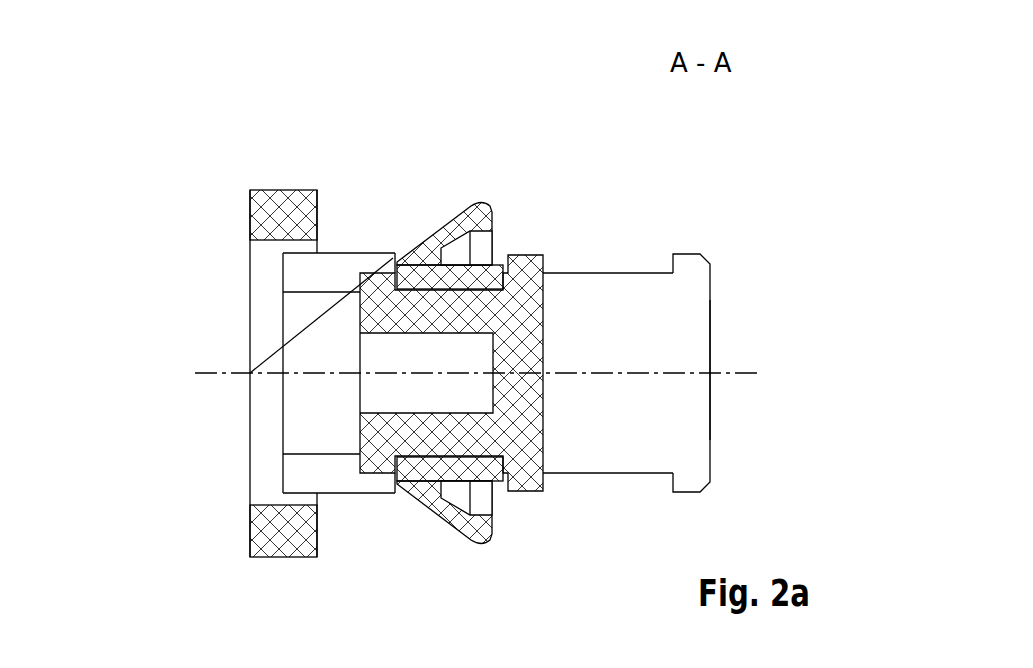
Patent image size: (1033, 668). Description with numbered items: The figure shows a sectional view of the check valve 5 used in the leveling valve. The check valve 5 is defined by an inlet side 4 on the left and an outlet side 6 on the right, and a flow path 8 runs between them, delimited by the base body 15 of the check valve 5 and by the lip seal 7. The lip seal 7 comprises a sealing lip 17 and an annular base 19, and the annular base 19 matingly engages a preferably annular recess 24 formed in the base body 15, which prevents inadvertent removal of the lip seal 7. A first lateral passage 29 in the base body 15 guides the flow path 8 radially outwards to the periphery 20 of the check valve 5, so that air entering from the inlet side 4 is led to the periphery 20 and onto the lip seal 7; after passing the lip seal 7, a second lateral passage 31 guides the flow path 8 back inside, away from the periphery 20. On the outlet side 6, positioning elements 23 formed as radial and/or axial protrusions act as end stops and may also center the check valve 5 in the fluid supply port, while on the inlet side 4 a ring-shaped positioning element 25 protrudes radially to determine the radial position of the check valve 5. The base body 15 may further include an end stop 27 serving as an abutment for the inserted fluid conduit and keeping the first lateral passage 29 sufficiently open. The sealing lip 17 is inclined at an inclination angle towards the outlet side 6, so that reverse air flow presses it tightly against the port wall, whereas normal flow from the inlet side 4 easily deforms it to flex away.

The inlet side 4 is at (152, 292).
The check valve 5 is at (550, 118).
The outlet side 6 is at (745, 303).
The lip seal 7 is at (423, 215).
The flow path 8 is at (398, 216).
The base body 15 is at (527, 274).
The sealing lip 17 is at (457, 226).
The annular base 19 is at (483, 272).
The periphery 20 is at (670, 176).
The positioning elements 23 is at (700, 253).
The recess 24 is at (498, 430).
The positioning element 25 is at (283, 194).
The end stop 27 is at (297, 470).
The first lateral passage 29 is at (327, 463).
The second lateral passage 31 is at (700, 352).